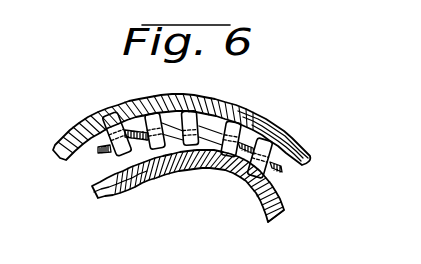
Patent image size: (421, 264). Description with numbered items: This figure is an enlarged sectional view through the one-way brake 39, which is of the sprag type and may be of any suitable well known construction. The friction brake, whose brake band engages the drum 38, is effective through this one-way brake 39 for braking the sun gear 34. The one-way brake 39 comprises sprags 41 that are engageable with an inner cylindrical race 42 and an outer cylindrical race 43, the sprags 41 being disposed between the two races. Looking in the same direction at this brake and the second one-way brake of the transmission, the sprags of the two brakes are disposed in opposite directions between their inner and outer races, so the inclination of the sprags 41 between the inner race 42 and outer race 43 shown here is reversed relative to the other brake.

The sun gear 34 is at (243, 189).
The drum 38 is at (283, 133).
The one-way brake 39 is at (76, 178).
The sprags 41 is at (195, 143).
The inner cylindrical race 42 is at (283, 200).
The outer cylindrical race 43 is at (300, 165).